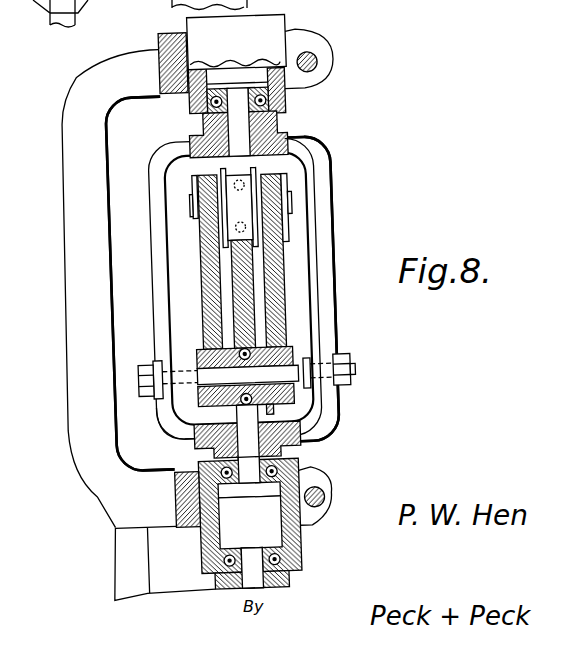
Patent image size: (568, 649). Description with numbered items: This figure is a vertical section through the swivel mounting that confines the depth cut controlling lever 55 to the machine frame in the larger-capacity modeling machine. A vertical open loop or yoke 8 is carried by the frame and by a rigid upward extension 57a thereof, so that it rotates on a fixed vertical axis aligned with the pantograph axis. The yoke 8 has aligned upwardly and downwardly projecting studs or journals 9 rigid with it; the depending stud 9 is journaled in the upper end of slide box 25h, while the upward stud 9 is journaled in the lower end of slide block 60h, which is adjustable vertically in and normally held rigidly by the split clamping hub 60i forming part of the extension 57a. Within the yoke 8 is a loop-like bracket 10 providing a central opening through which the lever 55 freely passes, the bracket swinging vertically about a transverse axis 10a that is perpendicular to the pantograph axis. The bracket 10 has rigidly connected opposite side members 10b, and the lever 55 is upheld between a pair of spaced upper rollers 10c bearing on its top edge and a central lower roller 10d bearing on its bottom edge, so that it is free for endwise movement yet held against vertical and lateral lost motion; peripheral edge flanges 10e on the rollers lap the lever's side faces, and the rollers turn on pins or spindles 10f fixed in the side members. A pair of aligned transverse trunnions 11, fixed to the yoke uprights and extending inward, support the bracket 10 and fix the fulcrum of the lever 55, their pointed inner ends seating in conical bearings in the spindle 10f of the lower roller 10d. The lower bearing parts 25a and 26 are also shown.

The yoke 8 is at (328, 164).
The studs or journals 9 is at (243, 444).
The bracket 10 is at (157, 181).
The transverse axis 10a is at (296, 355).
The side members 10b is at (143, 296).
The rollers 10c is at (220, 236).
The lower roller 10d is at (292, 333).
The peripheral edge flanges 10e is at (200, 408).
The pins or spindles 10f is at (195, 321).
The trunnions 11 is at (308, 395).
The lower bearing housing 25a is at (305, 467).
The slide box 25h is at (173, 479).
The bottom plate 26 is at (218, 590).
The lever 55 is at (250, 270).
The upward extension 57a is at (78, 165).
The slide block 60h is at (271, 38).
The split clamping hub 60i is at (315, 92).